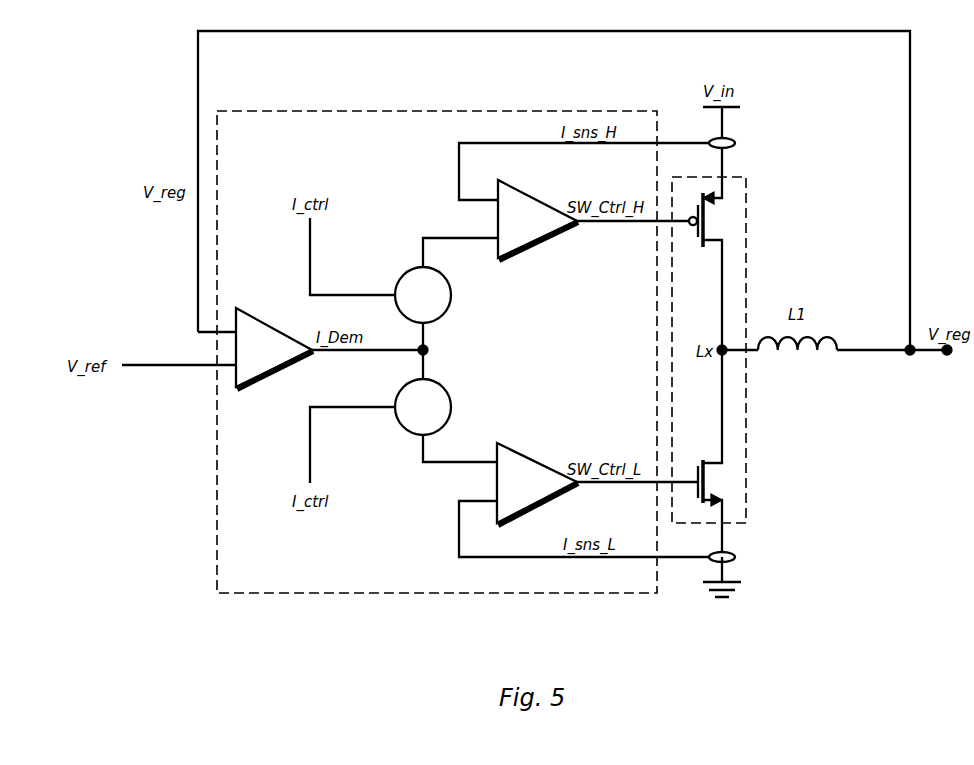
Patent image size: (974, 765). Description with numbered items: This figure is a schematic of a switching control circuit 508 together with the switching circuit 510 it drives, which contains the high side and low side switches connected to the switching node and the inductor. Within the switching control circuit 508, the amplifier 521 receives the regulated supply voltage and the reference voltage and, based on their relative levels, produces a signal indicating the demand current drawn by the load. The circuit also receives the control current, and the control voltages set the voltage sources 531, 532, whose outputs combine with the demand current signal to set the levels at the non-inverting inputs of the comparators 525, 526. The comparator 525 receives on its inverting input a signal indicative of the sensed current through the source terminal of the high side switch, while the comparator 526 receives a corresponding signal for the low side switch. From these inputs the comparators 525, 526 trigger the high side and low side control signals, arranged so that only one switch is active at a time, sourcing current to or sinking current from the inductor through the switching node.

The switching control circuit 508 is at (532, 111).
The power stage 510 is at (746, 177).
The amplifier 521 is at (254, 318).
The comparator 525 is at (517, 258).
The comparator 526 is at (517, 453).
The voltage source 531 is at (450, 300).
The voltage source 532 is at (450, 400).